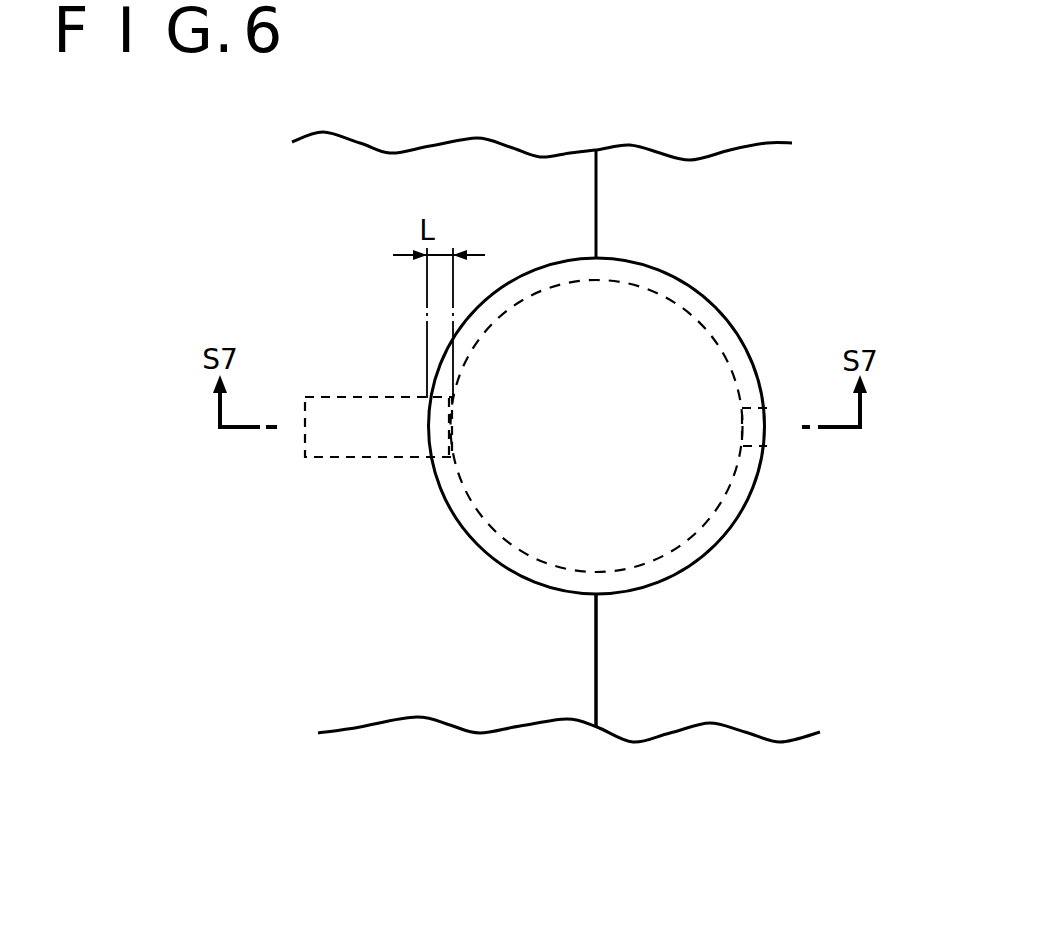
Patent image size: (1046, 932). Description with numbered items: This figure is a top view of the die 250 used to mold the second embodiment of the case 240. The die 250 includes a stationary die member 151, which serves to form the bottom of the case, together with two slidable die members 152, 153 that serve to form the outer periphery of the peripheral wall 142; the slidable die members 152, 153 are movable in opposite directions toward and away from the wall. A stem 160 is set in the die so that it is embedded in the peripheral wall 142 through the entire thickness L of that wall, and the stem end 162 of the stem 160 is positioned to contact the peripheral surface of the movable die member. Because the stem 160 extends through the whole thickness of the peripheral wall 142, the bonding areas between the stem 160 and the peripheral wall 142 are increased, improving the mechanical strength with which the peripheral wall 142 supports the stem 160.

The peripheral wall 142 is at (520, 561).
The stationary die member 151 is at (643, 308).
The slidable die member 152 is at (378, 200).
The slidable die member 153 is at (727, 197).
The stem 160 is at (347, 440).
The stem end 162 is at (449, 455).
The case 240 is at (672, 557).
The die 250 is at (822, 214).